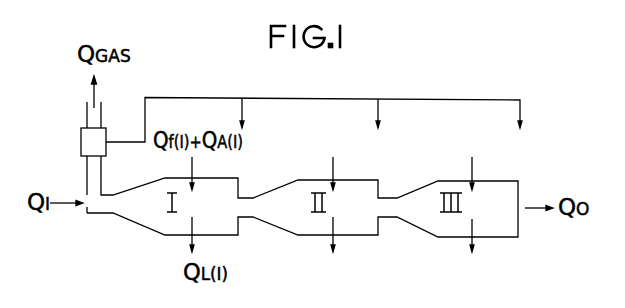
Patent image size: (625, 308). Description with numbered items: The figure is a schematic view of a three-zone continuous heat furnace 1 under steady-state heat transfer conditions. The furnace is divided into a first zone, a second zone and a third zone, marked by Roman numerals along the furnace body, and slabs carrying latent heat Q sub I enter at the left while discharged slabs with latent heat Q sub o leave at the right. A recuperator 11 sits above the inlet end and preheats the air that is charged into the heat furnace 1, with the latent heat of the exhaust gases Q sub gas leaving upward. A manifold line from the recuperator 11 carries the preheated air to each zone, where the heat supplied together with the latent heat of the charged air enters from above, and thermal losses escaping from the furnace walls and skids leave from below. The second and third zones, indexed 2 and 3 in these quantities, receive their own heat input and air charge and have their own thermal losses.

The heat furnace 1 is at (302, 206).
The recuperator 11 is at (76, 129).
The second heating zone (II) with fuel/air feed Qf(2)+QA(2) and loss QL 2 is at (323, 206).
The third heating zone (III) with fuel/air feed Qf(3)+QA(3) and loss QL 3 is at (474, 206).